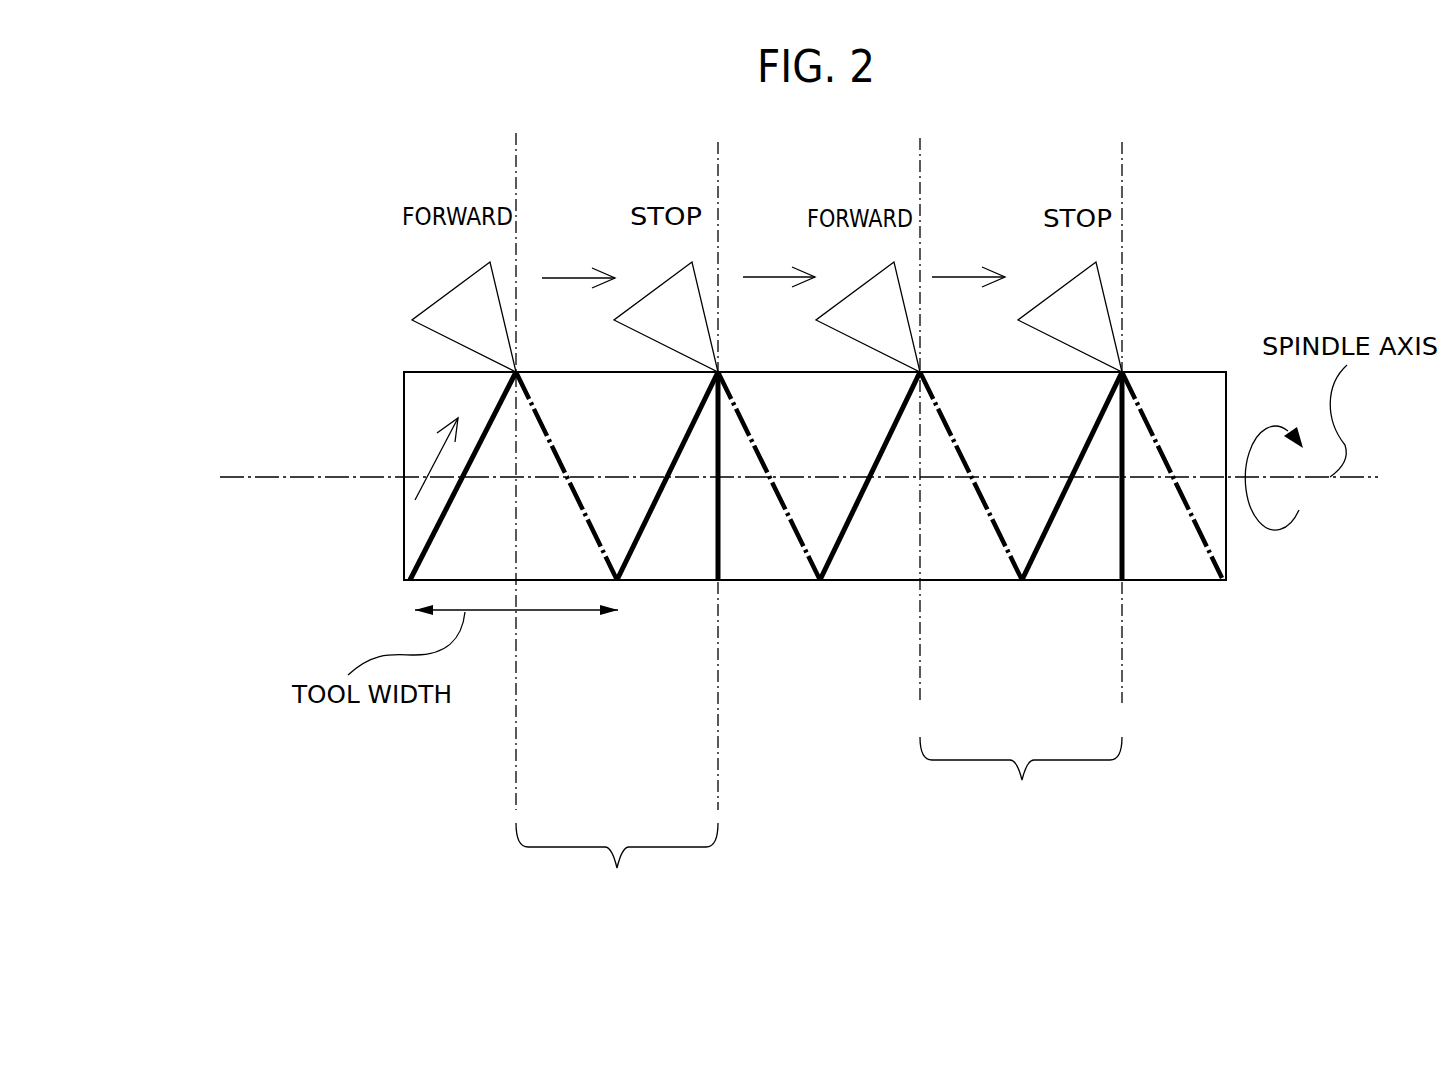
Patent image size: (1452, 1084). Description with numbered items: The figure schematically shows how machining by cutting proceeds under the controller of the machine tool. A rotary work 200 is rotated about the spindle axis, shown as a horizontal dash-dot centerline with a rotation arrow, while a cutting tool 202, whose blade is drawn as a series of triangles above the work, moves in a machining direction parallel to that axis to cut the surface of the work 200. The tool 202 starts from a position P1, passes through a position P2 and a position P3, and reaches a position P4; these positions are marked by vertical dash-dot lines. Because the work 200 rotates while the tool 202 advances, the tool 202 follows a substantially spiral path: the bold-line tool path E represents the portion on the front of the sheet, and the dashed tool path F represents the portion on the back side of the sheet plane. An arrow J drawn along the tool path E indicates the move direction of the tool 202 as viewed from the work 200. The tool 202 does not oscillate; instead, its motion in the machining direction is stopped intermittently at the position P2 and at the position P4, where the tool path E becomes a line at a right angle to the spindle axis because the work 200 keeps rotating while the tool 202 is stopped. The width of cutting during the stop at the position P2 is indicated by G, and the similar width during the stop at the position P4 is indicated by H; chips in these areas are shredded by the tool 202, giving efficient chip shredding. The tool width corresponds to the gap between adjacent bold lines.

The rotary work 200 is at (412, 372).
The cutting tool 202 is at (433, 300).
The tool path E is at (440, 523).
The tool path F is at (1190, 522).
The cutting width G is at (771, 893).
The cutting width H is at (1110, 804).
The arrow J is at (261, 435).
The position P1 is at (511, 456).
The position P2 is at (711, 455).
The position P3 is at (914, 403).
The position P4 is at (1114, 406).